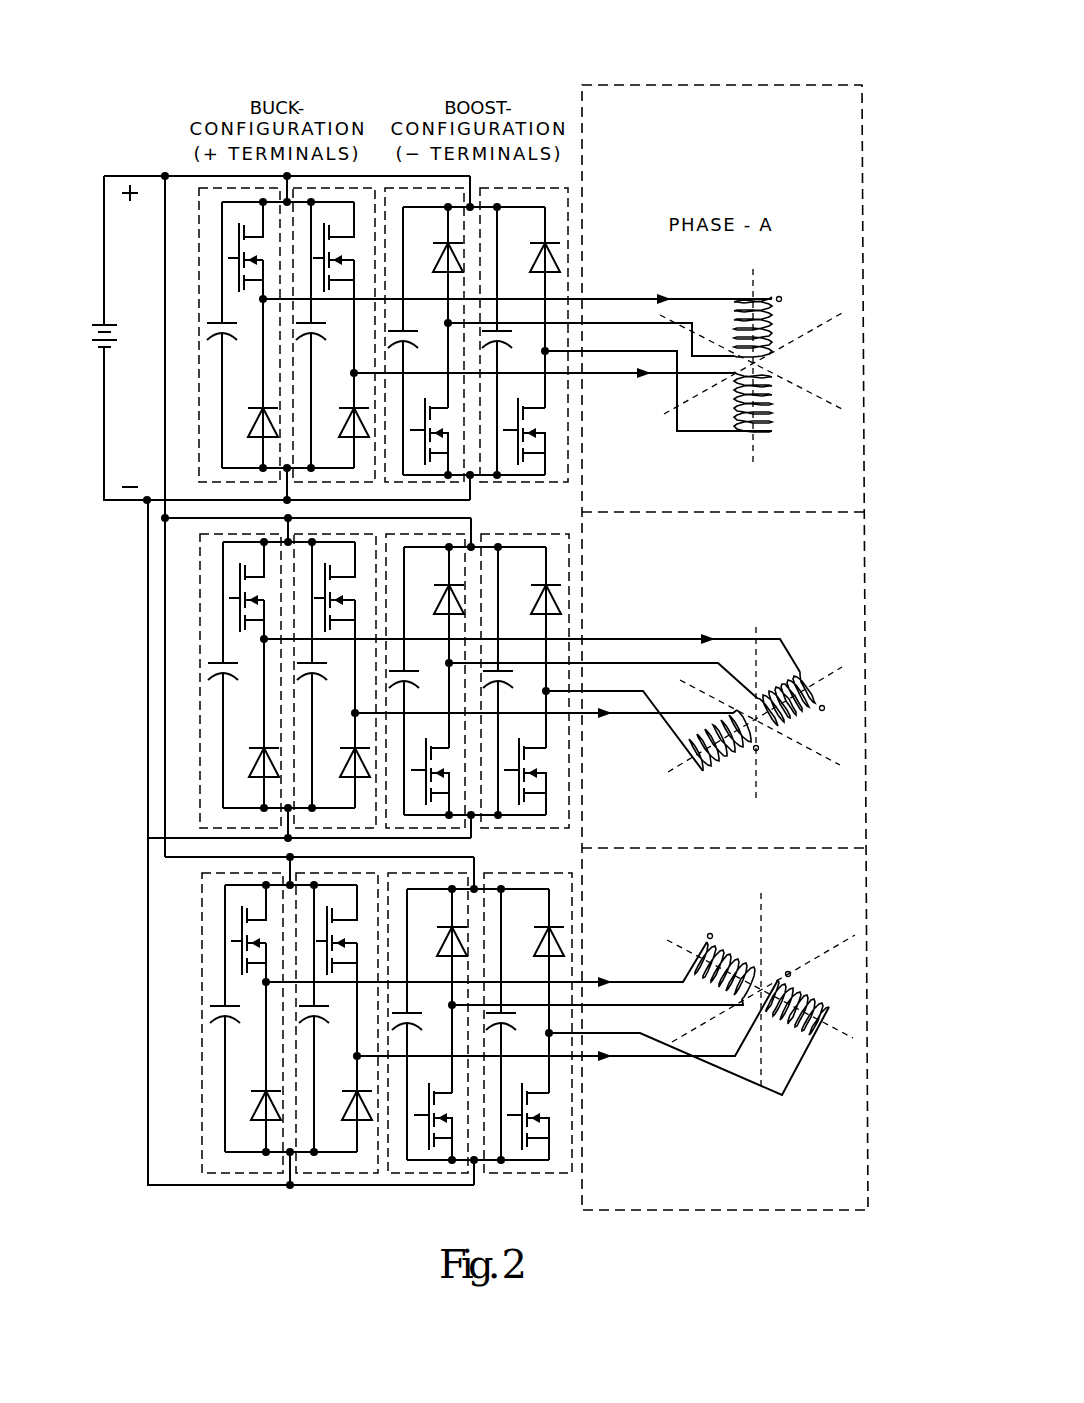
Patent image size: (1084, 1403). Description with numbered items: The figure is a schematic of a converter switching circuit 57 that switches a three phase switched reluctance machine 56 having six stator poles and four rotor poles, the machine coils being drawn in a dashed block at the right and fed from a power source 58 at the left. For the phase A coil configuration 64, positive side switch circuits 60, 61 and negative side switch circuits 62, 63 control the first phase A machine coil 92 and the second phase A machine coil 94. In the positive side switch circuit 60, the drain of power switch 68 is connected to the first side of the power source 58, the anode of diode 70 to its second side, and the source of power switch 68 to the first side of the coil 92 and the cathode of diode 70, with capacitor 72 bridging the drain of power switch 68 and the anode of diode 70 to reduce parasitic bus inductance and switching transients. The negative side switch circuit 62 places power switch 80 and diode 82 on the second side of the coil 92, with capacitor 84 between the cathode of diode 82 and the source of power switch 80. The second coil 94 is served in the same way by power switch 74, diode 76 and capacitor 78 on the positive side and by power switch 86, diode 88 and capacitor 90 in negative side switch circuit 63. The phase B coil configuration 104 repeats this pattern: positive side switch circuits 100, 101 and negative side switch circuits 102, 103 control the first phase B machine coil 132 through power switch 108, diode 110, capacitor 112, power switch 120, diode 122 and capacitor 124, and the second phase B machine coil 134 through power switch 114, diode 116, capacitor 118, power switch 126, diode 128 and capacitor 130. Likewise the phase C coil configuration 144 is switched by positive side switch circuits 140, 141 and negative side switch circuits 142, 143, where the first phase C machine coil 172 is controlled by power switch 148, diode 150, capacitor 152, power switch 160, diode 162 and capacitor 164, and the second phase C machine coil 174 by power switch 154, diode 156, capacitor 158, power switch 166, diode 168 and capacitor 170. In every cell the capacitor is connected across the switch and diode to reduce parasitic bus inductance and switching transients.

The switched reluctance machine 56 is at (765, 73).
The converter switching circuit 57 is at (493, 63).
The power source 58 is at (97, 323).
The positive side switch circuit 60 is at (197, 188).
The positive side switch circuit 61 is at (373, 188).
The negative side switch circuit 62 is at (383, 188).
The negative side switch circuit 63 is at (558, 188).
The phase A coil configuration 64 is at (663, 85).
The power switch 68 is at (239, 228).
The diode 70 is at (250, 427).
The capacitor 72 is at (213, 320).
The power switch 74 is at (328, 248).
The diode 76 is at (340, 437).
The capacitor 78 is at (293, 335).
The power switch 80 is at (423, 405).
The diode 82 is at (453, 262).
The capacitor 84 is at (407, 328).
The power switch 86 is at (518, 462).
The diode 88 is at (552, 262).
The capacitor 90 is at (513, 342).
The first phase A machine coil 92 is at (772, 322).
The second phase A machine coil 94 is at (770, 405).
The positive side switch circuit 100 is at (200, 572).
The positive side switch circuit 101 is at (293, 557).
The negative side switch circuit 102 is at (418, 670).
The negative side switch circuit 103 is at (568, 803).
The phase B coil configuration 104 is at (864, 600).
The power switch 108 is at (237, 587).
The diode 110 is at (250, 775).
The capacitor 112 is at (205, 680).
The power switch 114 is at (327, 622).
The diode 116 is at (343, 775).
The capacitor 118 is at (297, 677).
The power switch 120 is at (428, 745).
The diode 122 is at (458, 598).
The capacitor 124 is at (475, 630).
The power switch 126 is at (522, 802).
The diode 128 is at (557, 602).
The capacitor 130 is at (507, 682).
The first phase B machine coil 132 is at (778, 685).
The second phase B machine coil 134 is at (715, 767).
The positive side switch circuit 140 is at (203, 917).
The positive side switch circuit 141 is at (293, 975).
The negative side switch circuit 142 is at (437, 1175).
The negative side switch circuit 143 is at (530, 1175).
The phase C coil configuration 144 is at (838, 1210).
The power switch 148 is at (240, 912).
The diode 150 is at (252, 1112).
The capacitor 152 is at (207, 1013).
The power switch 154 is at (328, 915).
The diode 156 is at (343, 1098).
The capacitor 158 is at (297, 1012).
The power switch 160 is at (427, 1135).
The diode 162 is at (460, 943).
The capacitor 164 is at (425, 1027).
The power switch 166 is at (527, 1097).
The diode 168 is at (567, 942).
The capacitor 170 is at (513, 1027).
The first phase C machine coil 172 is at (728, 953).
The second phase C machine coil 174 is at (803, 1000).